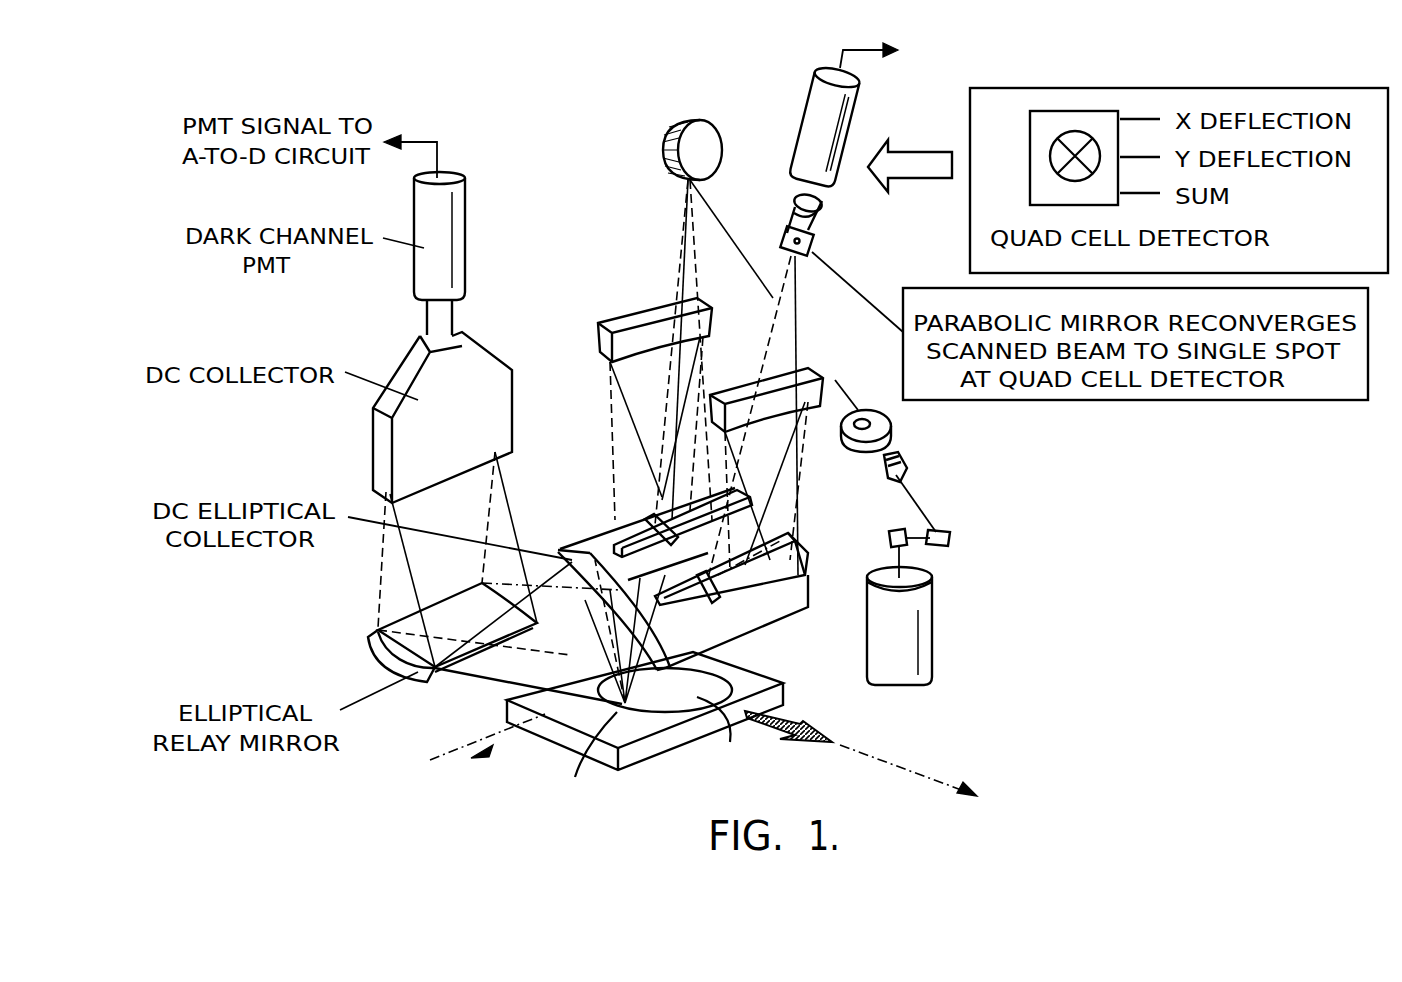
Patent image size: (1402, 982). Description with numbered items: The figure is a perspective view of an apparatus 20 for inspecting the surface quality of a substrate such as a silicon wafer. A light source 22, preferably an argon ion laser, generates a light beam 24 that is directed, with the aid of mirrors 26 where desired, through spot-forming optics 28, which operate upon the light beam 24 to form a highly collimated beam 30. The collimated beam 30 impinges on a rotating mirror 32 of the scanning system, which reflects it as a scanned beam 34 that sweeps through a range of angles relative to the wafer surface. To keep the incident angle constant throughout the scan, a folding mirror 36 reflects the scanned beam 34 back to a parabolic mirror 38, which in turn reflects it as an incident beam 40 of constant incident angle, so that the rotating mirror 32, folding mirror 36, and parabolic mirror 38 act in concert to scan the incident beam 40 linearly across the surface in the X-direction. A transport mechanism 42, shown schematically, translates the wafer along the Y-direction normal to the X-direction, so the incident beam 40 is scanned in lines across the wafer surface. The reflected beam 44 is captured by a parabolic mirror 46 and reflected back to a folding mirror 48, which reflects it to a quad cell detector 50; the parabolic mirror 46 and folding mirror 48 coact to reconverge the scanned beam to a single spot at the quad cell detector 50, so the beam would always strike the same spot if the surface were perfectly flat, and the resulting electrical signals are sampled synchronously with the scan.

The apparatus 20 is at (1033, 516).
The light source 22 is at (932, 638).
The light beam 24 is at (905, 556).
The mirrors 26 is at (937, 548).
The spot-forming optics 28 is at (890, 430).
The collimated beam 30 is at (735, 228).
The rotating mirror 32 is at (700, 130).
The scanned beam 34 is at (682, 222).
The folding mirror 36 is at (678, 512).
The parabolic mirror 38 is at (600, 346).
The incident beam 40 is at (612, 455).
The transport mechanism 42 is at (540, 700).
The reflected beam 44 is at (760, 503).
The parabolic mirror 46 is at (805, 375).
The folding mirror 48 is at (758, 573).
The quad cell detector 50 is at (855, 114).